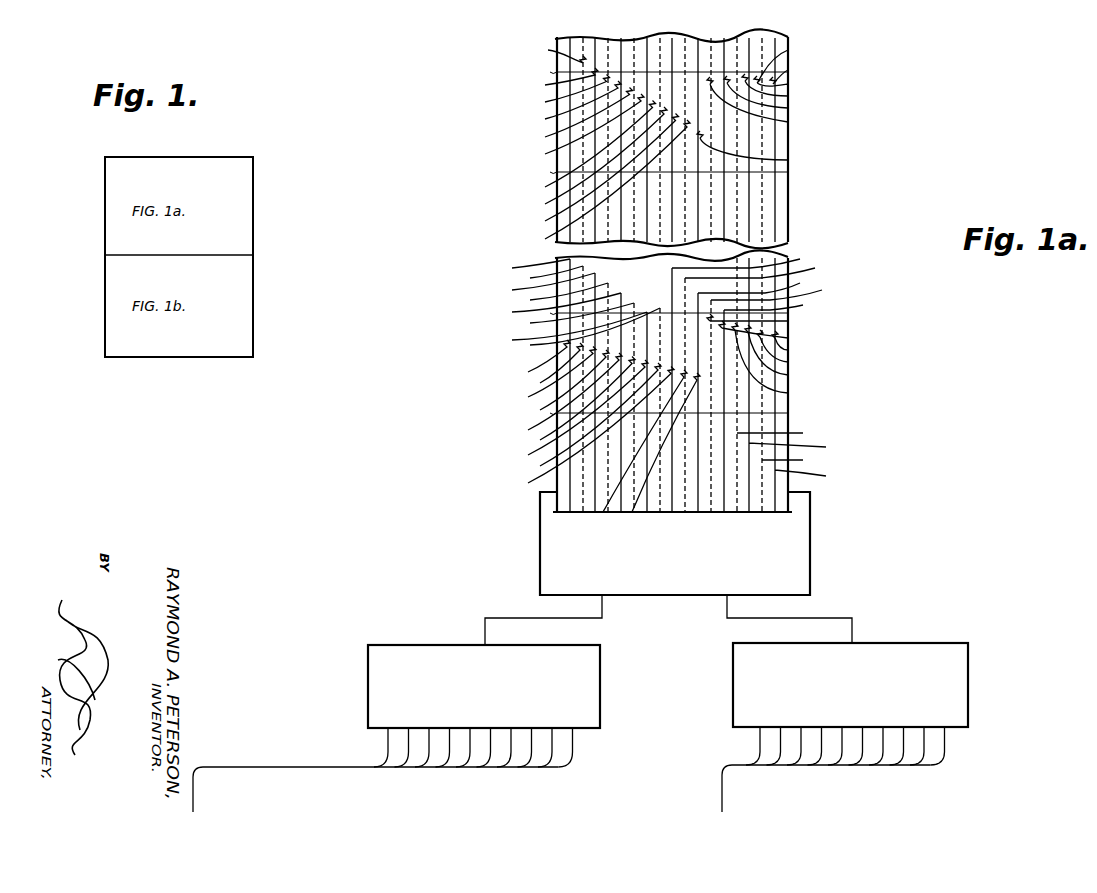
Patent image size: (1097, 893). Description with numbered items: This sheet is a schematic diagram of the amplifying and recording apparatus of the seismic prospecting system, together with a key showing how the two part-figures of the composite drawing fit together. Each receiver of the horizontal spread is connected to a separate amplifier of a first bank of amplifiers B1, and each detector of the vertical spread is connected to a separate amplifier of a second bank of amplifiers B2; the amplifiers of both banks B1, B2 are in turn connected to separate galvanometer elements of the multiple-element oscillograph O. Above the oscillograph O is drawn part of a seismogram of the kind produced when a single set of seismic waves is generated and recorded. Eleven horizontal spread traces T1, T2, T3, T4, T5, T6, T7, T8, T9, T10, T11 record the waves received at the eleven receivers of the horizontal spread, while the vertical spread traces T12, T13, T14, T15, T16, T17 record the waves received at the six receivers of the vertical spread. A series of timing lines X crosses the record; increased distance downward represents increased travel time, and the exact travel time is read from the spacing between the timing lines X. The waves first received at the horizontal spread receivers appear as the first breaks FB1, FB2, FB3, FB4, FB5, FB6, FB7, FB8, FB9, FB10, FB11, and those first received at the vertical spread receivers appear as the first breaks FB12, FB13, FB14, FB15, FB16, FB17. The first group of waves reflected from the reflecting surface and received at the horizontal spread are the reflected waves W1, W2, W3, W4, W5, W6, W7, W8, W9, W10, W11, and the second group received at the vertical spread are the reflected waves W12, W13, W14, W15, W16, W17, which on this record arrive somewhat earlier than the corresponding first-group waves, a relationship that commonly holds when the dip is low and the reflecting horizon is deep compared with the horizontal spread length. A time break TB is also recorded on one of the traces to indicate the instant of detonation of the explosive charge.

The first break FB1 is at (556, 53).
The first break FB2 is at (560, 81).
The first break FB3 is at (566, 93).
The first break FB4 is at (571, 104).
The first break FB5 is at (577, 117).
The first break FB6 is at (583, 128).
The first break FB7 is at (589, 149).
The first break FB8 is at (594, 160).
The first break FB9 is at (600, 172).
The first break FB10 is at (606, 184).
The first break FB11 is at (788, 160).
The first break FB12 is at (788, 122).
The first break FB13 is at (788, 108).
The first break FB14 is at (788, 96).
The first break FB15 is at (788, 50).
The first break FB16 is at (788, 70).
The first break FB17 is at (788, 84).
The time break TB is at (745, 44).
The timing lines X is at (660, 242).
The horizontal spread trace T1 is at (533, 385).
The horizontal spread trace T2 is at (549, 389).
The horizontal spread trace T3 is at (546, 392).
The horizontal spread trace T4 is at (561, 397).
The horizontal spread trace T5 is at (559, 402).
The horizontal spread trace T6 is at (574, 407).
The horizontal spread trace T7 is at (572, 412).
The horizontal spread trace T8 is at (587, 410).
The horizontal spread trace T9 is at (743, 382).
The horizontal spread trace T10 is at (760, 386).
The horizontal spread trace T11 is at (759, 394).
The vertical spread trace T12 is at (776, 397).
The vertical spread trace T13 is at (773, 405).
The vertical spread trace T14 is at (780, 385).
The vertical spread trace T15 is at (797, 385).
The vertical spread trace T16 is at (792, 385).
The vertical spread trace T17 is at (810, 385).
The reflected wave W1 is at (537, 360).
The reflected wave W2 is at (550, 367).
The reflected wave W3 is at (550, 377).
The reflected wave W4 is at (563, 384).
The reflected wave W5 is at (563, 396).
The reflected wave W6 is at (577, 403).
The reflected wave W7 is at (576, 412).
The reflected wave W8 is at (590, 419).
The reflected wave W9 is at (591, 430).
The reflected wave W10 is at (632, 451).
The reflected wave W11 is at (662, 452).
The reflected wave W12 is at (788, 321).
The reflected wave W13 is at (788, 338).
The reflected wave W14 is at (788, 393).
The reflected wave W15 is at (788, 375).
The reflected wave W16 is at (788, 362).
The reflected wave W17 is at (788, 350).
The multiple-element oscillograph O is at (660, 596).
The first bank of amplifiers B1 is at (368, 705).
The second bank of amplifiers B2 is at (968, 685).